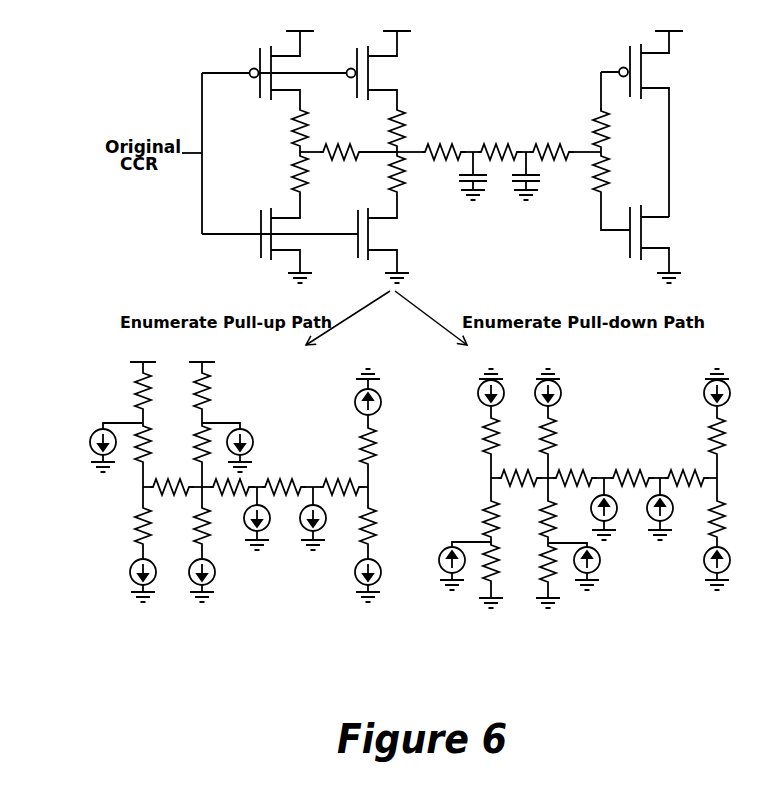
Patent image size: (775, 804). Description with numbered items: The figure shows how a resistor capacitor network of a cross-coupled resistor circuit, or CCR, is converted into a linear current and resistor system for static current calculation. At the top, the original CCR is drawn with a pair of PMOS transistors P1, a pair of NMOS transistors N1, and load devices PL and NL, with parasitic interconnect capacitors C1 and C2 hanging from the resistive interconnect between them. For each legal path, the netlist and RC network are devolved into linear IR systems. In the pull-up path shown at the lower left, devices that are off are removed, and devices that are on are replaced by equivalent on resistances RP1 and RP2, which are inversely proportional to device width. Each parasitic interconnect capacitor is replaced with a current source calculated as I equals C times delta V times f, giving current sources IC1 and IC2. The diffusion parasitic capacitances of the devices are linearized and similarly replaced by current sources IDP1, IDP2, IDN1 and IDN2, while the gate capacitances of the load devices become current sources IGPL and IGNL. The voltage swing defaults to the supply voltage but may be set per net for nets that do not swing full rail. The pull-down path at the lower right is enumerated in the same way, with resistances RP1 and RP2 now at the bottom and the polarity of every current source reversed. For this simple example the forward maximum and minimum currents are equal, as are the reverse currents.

The PMOS transistor P1 is at (314, 69).
The NMOS transistor N1 is at (313, 245).
The load PMOS transistor PL is at (642, 124).
The load NMOS transistor NL is at (655, 244).
The parasitic interconnect capacitor C1 is at (460, 176).
The parasitic interconnect capacitor C2 is at (540, 176).
The equivalent on resistance RP1 is at (310, 485).
The equivalent on resistance RP2 is at (374, 485).
The diffusion capacitance current source IDP1 is at (279, 420).
The diffusion capacitance current source IDP2 is at (401, 420).
The diffusion capacitance current source IDN1 is at (289, 566).
The diffusion capacitance current source IDN2 is at (412, 572).
The gate capacitance current source IGPL is at (521, 392).
The gate capacitance current source IGNL is at (521, 574).
The interconnect capacitor current source IC1 is at (500, 514).
The interconnect capacitor current source IC2 is at (419, 514).